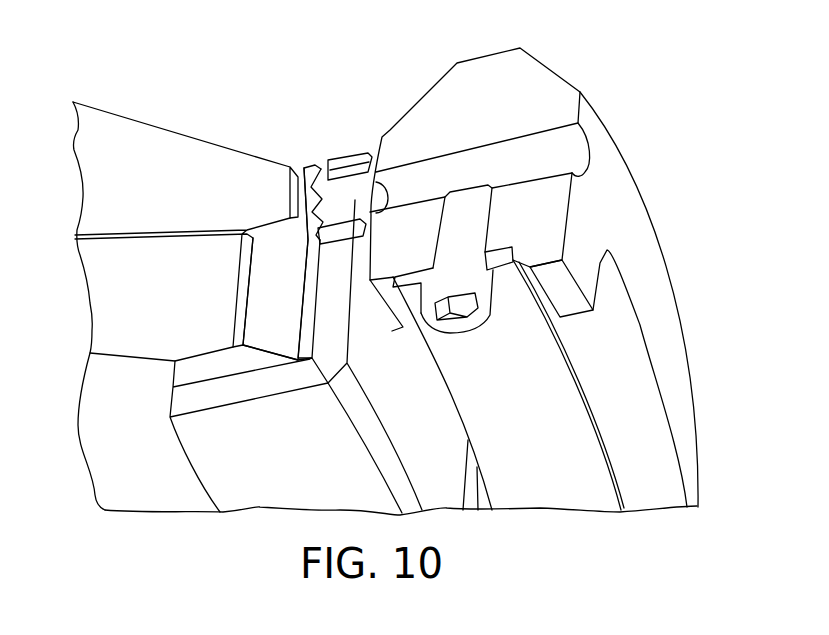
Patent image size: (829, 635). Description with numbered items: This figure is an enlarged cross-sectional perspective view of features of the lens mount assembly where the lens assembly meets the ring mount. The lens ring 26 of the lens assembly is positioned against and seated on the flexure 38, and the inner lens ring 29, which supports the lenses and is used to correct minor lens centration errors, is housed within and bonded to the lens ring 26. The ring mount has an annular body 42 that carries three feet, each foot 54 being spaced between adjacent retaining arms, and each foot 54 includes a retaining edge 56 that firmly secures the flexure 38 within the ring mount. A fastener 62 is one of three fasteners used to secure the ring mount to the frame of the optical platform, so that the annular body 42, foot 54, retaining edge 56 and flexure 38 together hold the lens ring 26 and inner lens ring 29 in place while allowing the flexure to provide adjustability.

The lens ring 26 is at (274, 476).
The inner lens ring 29 is at (283, 250).
The foot 54 is at (387, 290).
The fastener 62 is at (467, 213).
The annular body 42 is at (663, 323).
The retaining edge 56 is at (560, 290).
The flexure 38 is at (528, 440).